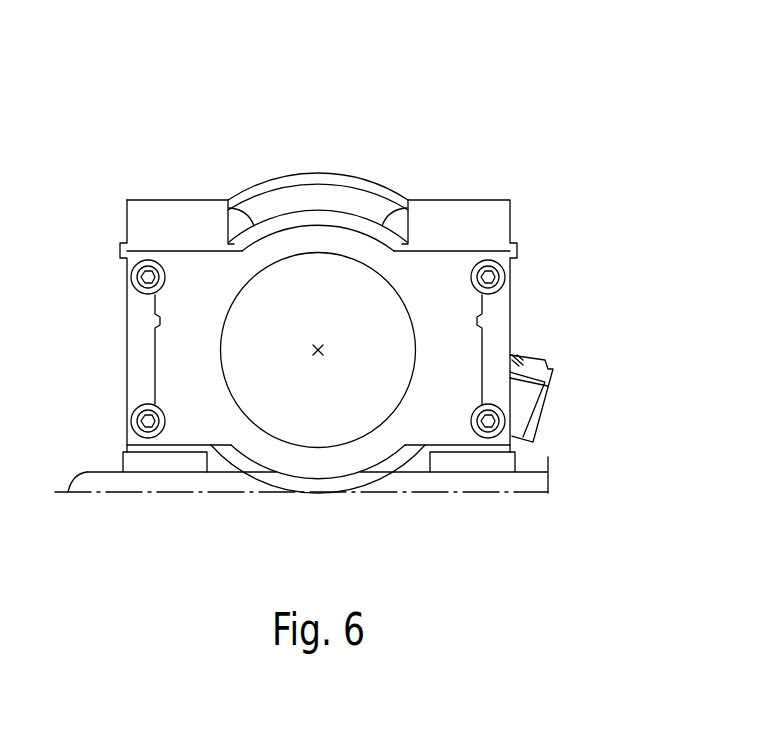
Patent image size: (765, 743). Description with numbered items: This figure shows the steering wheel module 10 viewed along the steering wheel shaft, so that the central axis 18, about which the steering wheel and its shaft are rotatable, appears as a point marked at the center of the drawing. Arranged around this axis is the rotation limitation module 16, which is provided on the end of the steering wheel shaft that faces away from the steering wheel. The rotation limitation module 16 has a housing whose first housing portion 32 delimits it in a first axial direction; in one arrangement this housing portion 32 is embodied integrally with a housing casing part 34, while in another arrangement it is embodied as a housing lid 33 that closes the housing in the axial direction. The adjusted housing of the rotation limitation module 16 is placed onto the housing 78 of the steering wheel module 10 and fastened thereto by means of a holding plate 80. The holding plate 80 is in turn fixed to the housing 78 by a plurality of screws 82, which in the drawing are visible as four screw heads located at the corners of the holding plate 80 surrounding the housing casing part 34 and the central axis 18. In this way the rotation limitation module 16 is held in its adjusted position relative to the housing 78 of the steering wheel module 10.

The steering wheel module 10 is at (565, 106).
The rotation limitation module 16 is at (548, 188).
The central axis 18 is at (321, 356).
The housing portion 32 is at (299, 415).
The housing lid 33 is at (275, 400).
The housing casing part 34 is at (330, 215).
The housing 78 is at (183, 218).
The holding plate 80 is at (432, 275).
The screws 82 is at (148, 277).